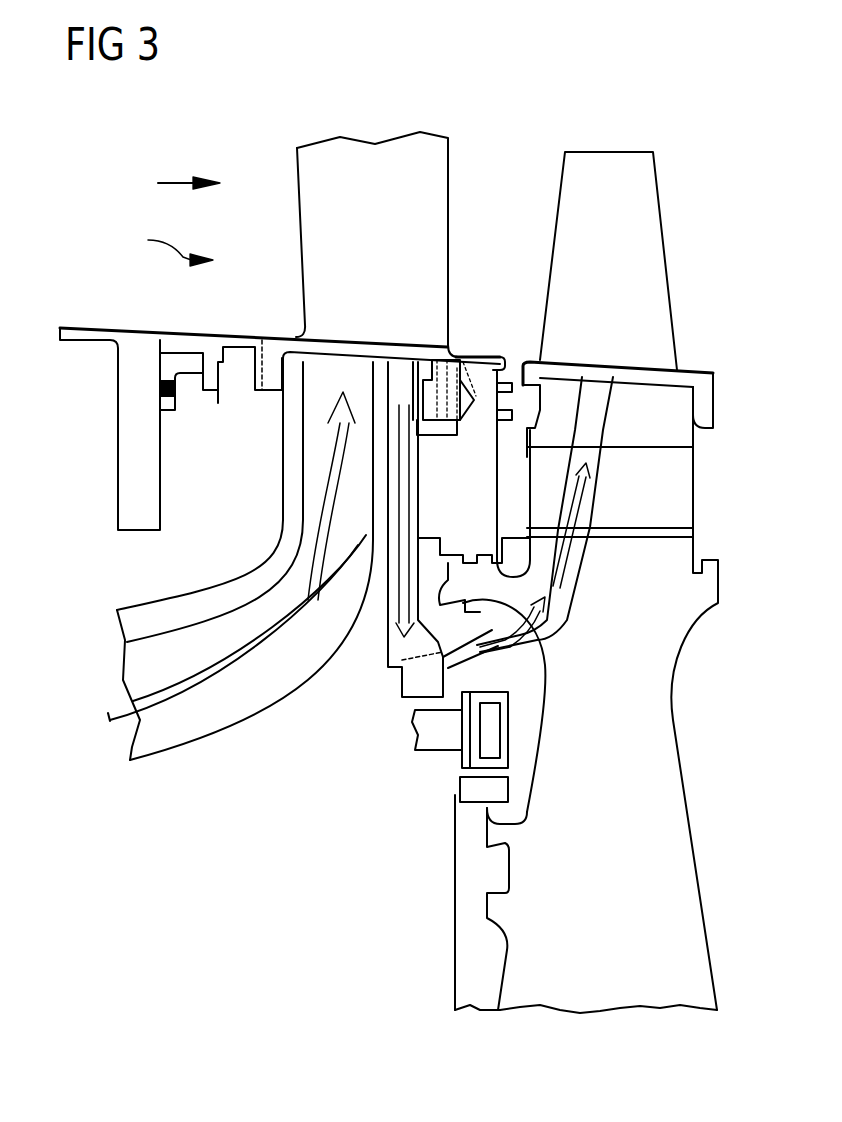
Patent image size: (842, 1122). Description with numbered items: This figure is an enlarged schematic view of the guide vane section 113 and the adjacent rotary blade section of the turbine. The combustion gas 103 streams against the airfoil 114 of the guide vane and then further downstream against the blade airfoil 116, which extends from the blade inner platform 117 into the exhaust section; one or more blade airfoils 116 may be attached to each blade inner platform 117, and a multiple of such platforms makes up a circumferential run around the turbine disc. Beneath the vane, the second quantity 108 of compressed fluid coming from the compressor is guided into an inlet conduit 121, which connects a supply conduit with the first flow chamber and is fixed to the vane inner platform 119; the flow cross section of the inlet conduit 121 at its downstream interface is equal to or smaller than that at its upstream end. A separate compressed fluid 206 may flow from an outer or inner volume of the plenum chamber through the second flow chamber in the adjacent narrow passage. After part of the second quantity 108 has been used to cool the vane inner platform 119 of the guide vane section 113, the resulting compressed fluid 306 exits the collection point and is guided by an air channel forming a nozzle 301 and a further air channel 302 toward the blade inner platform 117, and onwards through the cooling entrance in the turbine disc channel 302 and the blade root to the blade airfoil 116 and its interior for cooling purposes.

The combustion gas 103 is at (175, 183).
The second quantity of the compressed fluid 108 is at (198, 687).
The guide vane section 113 is at (155, 245).
The airfoil 114 is at (358, 153).
The blade airfoil 116 is at (612, 163).
The blade inner platform 117 is at (693, 392).
The vane inner platform 119 is at (273, 345).
The inlet conduit 121 is at (303, 473).
The compressed fluid 206 is at (403, 498).
The nozzle 301 is at (462, 655).
The further air channel 302 is at (577, 563).
The compressed fluid 306 is at (588, 492).